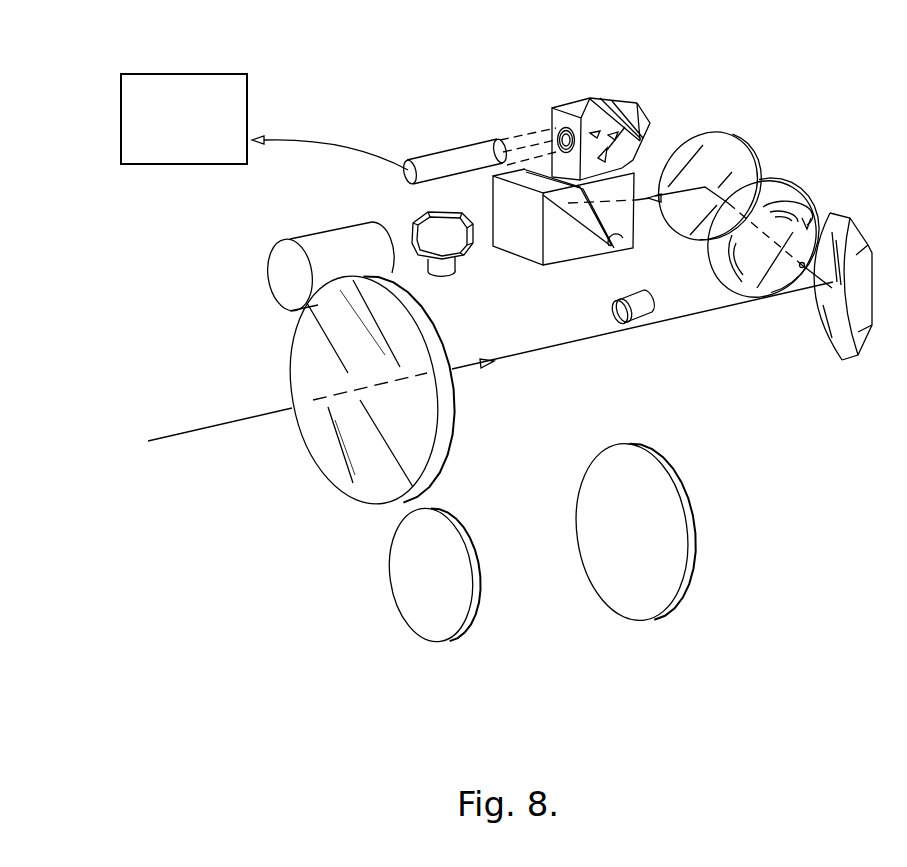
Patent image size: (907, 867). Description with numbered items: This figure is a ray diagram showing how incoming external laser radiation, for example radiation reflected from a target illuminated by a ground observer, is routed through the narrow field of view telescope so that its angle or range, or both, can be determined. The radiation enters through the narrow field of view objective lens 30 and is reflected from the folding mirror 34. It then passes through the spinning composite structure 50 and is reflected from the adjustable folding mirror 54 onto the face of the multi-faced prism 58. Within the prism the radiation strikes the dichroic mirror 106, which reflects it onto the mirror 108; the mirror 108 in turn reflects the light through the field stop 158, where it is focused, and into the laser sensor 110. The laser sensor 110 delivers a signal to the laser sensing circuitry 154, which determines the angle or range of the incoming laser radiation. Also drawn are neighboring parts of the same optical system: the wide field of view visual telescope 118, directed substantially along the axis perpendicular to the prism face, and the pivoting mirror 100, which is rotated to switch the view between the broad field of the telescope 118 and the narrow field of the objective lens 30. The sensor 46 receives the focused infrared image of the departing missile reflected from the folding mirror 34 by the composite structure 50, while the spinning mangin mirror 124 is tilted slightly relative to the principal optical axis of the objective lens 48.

The laser sensing circuitry 154 is at (213, 83).
The laser sensor 110 is at (437, 154).
The field stop 158 is at (551, 118).
The mirror 108 is at (648, 125).
The multi-faced prism 58 is at (533, 250).
The dichroic mirror 106 is at (617, 243).
The mirror 100 is at (473, 257).
The wide field of view visual telescope 118 is at (297, 234).
The objective lens 30 is at (443, 436).
The sensor 46 is at (616, 312).
The adjustable folding mirror 54 is at (746, 160).
The composite structure 50 is at (806, 200).
The folding mirror 34 is at (832, 339).
The objective lens 48 is at (468, 548).
The spinning mangin mirror 124 is at (687, 562).